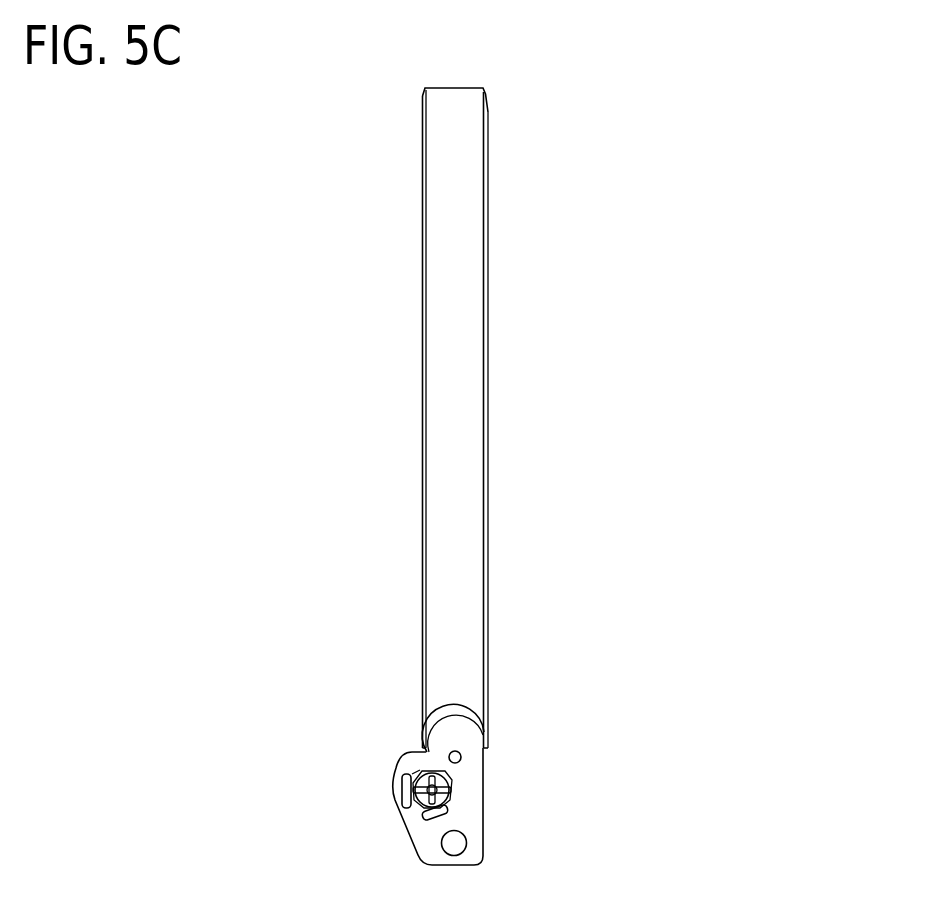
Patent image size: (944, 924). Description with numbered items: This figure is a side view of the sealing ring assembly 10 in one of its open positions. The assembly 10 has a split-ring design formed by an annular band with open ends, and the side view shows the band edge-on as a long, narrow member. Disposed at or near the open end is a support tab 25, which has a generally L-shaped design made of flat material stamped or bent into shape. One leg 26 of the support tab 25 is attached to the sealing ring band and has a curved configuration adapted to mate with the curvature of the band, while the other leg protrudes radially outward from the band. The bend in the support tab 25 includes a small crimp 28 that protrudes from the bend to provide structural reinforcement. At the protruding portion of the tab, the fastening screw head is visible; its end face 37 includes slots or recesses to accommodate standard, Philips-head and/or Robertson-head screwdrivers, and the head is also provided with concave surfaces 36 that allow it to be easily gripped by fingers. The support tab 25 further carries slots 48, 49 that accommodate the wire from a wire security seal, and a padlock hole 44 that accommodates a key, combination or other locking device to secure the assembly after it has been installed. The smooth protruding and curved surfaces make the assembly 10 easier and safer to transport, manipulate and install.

The sealing ring assembly 10 is at (548, 272).
The support tab 25 is at (402, 825).
The leg 26 is at (452, 732).
The crimp 28 is at (456, 751).
The concave surfaces 36 is at (417, 775).
The end face 37 is at (460, 778).
The padlock hole 44 is at (442, 843).
The slot 48 is at (403, 790).
The slot 49 is at (453, 813).